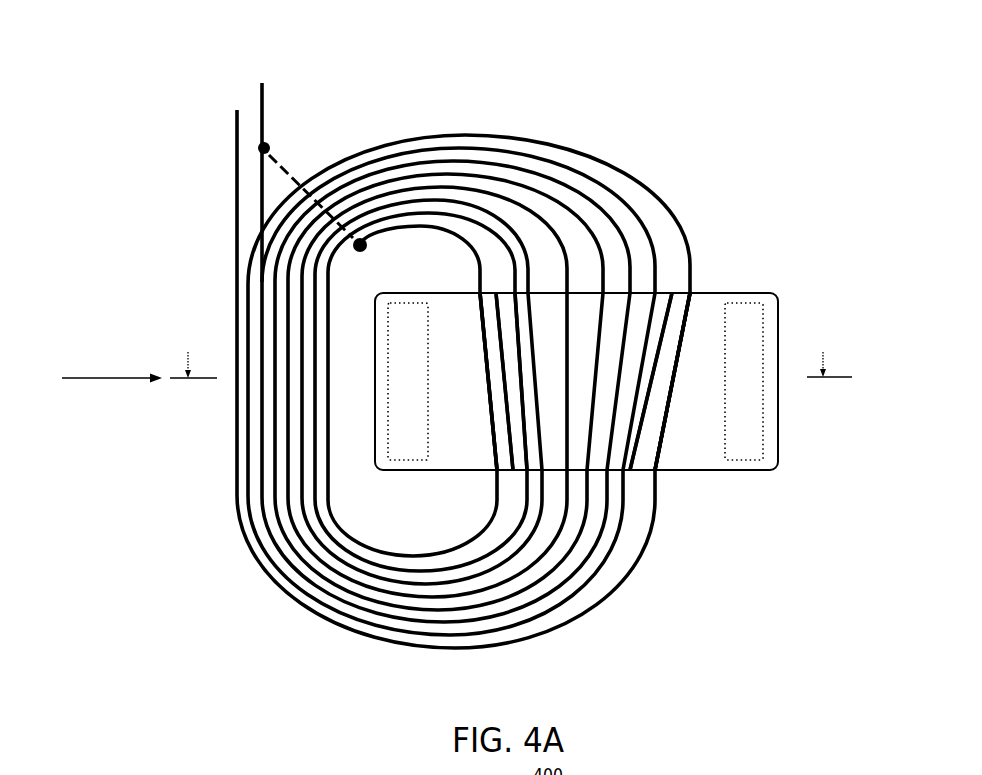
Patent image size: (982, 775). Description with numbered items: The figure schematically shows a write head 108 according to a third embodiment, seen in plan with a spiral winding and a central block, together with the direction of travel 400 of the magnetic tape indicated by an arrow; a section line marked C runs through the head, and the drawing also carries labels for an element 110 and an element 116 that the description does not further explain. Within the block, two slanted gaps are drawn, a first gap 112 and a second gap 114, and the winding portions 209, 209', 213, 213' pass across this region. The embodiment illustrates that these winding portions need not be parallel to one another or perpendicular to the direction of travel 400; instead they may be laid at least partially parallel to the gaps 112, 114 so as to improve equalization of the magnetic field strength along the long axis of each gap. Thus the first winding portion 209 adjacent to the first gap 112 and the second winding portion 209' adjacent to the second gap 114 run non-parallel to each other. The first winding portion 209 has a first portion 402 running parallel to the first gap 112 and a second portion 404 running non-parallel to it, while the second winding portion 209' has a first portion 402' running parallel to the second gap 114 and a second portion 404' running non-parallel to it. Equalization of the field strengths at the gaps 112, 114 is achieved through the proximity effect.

The write head 108 is at (408, 395).
The chip module 110 is at (790, 438).
The first gap 112 is at (500, 320).
The second gap 114 is at (662, 348).
The outer coil turn 116 is at (394, 650).
The first winding portion 209 is at (474, 381).
The second winding portion 209' is at (715, 411).
The winding portion 213 is at (574, 481).
The winding portion 213' is at (665, 465).
The direction of travel 400 is at (105, 378).
The first portion 402 is at (467, 381).
The first portion 402' is at (717, 350).
The second portion 404 is at (466, 381).
The second portion 404' is at (684, 429).